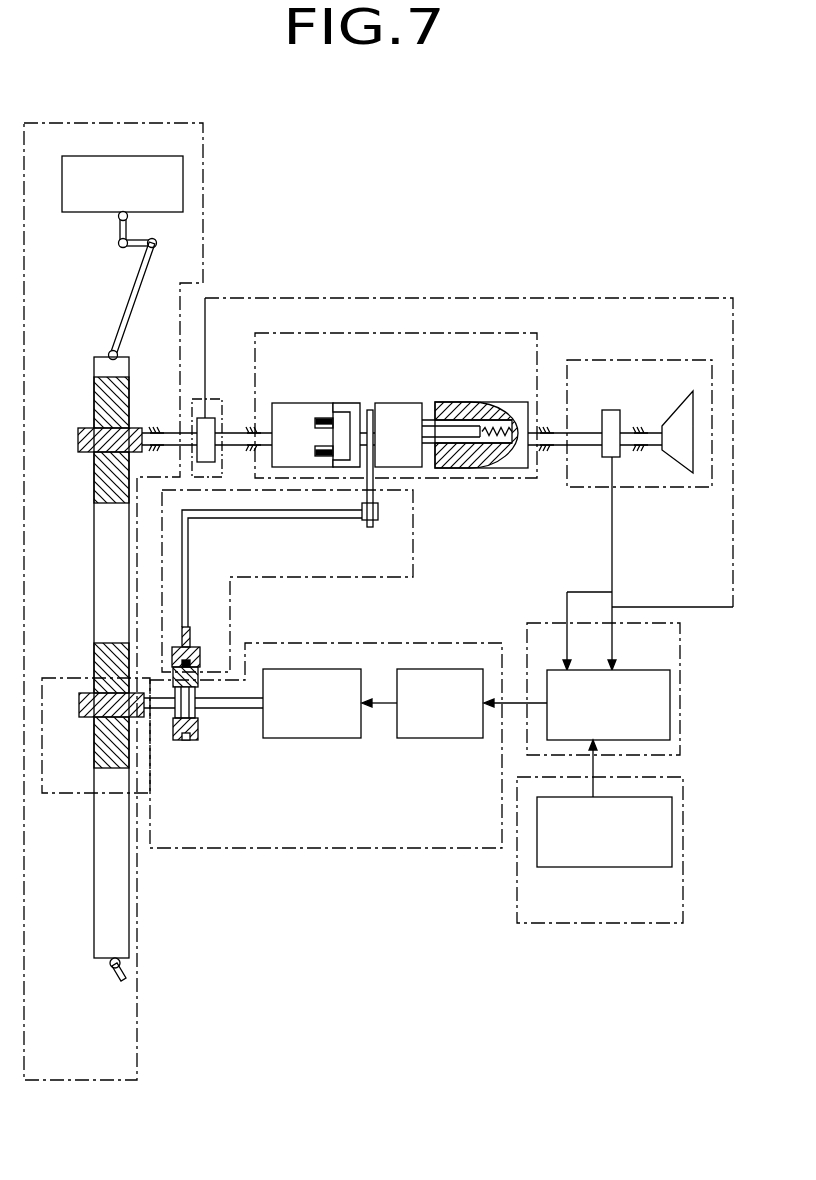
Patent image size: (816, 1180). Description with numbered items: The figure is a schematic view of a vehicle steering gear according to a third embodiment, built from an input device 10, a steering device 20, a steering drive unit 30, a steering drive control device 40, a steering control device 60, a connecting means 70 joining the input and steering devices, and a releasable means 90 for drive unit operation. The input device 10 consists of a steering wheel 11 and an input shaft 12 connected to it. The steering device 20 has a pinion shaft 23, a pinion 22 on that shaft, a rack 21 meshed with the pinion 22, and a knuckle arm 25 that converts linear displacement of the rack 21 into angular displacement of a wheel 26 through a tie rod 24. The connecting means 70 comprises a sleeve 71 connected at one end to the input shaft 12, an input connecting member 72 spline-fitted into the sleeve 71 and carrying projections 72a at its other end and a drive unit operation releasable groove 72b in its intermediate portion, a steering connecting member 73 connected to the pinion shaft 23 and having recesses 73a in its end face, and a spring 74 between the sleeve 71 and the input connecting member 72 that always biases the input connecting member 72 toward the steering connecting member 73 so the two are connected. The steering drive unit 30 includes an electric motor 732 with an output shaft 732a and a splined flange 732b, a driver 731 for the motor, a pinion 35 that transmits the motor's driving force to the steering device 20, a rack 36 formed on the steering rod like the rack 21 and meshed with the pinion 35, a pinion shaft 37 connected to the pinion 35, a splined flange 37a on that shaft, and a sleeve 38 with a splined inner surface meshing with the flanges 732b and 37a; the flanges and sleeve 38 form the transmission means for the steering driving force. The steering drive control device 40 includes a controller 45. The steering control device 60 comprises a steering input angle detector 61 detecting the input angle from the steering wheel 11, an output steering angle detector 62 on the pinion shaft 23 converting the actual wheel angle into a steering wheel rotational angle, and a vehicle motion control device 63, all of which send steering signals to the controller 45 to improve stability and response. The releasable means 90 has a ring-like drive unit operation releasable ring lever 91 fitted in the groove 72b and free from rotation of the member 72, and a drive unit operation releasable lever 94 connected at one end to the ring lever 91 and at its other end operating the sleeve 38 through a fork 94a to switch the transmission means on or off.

The input device 10 is at (735, 380).
The steering wheel 11 is at (668, 425).
The input shaft 12 is at (587, 433).
The steering device 20 is at (203, 157).
The rack 21 is at (94, 388).
The pinion 22 is at (88, 454).
The pinion shaft 23 is at (176, 432).
The tie rod 24 is at (128, 300).
The knuckle arm 25 is at (133, 248).
The wheel 26 is at (110, 156).
The steering drive unit 30 is at (473, 848).
The pinion 35 is at (86, 719).
The rack 36 is at (96, 757).
The pinion shaft 37 is at (153, 708).
The flange 37a is at (173, 735).
The sleeve 38 is at (196, 677).
The steering drive control device 40 is at (680, 655).
The controller 45 is at (655, 670).
The steering control device 60 is at (683, 810).
The steering input angle detector 61 is at (622, 455).
The output steering angle detector 62 is at (215, 421).
The vehicle motion control device 63 is at (632, 867).
The connecting means 70 is at (537, 343).
The sleeve 71 is at (497, 402).
The input connecting member 72 is at (410, 403).
The projections 72a is at (345, 403).
The drive unit operation releasable groove 72b is at (370, 410).
The steering connecting member 73 is at (286, 403).
The recesses 73a is at (322, 418).
The spring 74 is at (490, 468).
The releasable means for drive unit operation 90 is at (413, 542).
The drive unit operation releasable ring lever 91 is at (378, 508).
The drive unit operation releasable lever 94 is at (252, 518).
The fork 94a is at (196, 652).
The driver 731 is at (463, 738).
The electric motor 732 is at (327, 738).
The output shaft 732a is at (213, 710).
The flange 732b is at (198, 735).